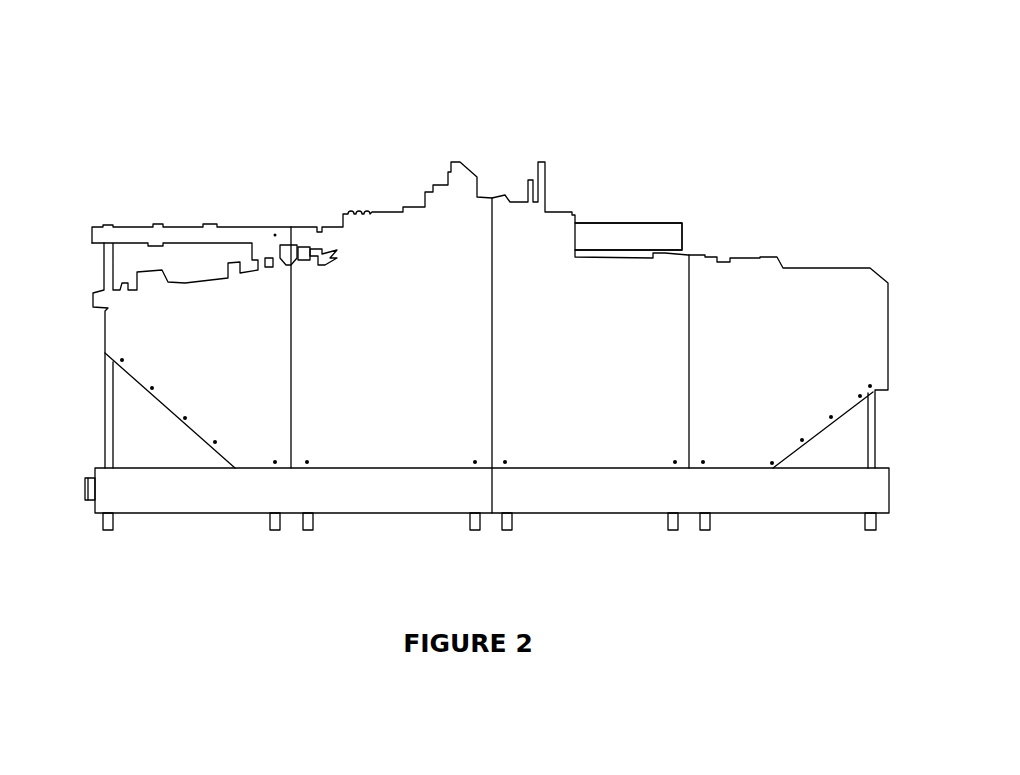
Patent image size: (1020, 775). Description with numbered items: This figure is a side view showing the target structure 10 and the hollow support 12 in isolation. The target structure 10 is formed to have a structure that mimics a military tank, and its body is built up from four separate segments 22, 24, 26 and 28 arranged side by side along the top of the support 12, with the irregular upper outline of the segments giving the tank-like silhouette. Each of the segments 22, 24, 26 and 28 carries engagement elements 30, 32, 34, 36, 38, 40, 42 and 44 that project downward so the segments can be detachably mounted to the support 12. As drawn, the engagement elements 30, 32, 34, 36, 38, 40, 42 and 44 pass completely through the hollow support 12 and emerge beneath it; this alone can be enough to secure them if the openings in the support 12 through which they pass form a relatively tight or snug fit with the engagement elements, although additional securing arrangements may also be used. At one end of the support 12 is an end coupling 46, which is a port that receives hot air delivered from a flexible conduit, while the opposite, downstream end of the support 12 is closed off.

The target structure 10 is at (723, 157).
The hollow support 12 is at (240, 493).
The segment 22 is at (233, 300).
The segment 24 is at (378, 237).
The segment 26 is at (567, 283).
The segment 28 is at (810, 308).
The engagement element 30 is at (113, 520).
The engagement element 32 is at (277, 530).
The engagement element 34 is at (312, 525).
The engagement element 36 is at (468, 525).
The engagement element 38 is at (513, 527).
The engagement element 40 is at (668, 527).
The engagement element 42 is at (710, 528).
The engagement element 44 is at (865, 527).
The end coupling 46 is at (83, 493).